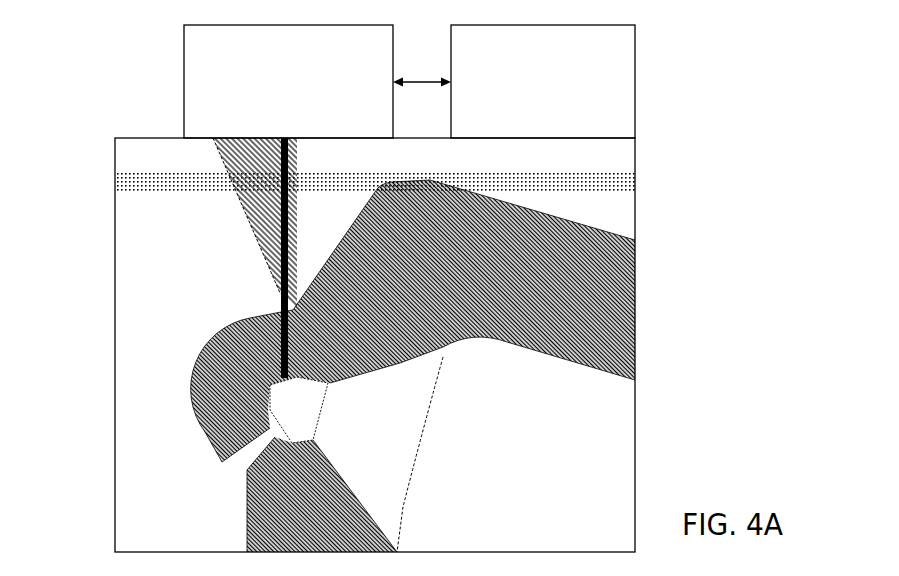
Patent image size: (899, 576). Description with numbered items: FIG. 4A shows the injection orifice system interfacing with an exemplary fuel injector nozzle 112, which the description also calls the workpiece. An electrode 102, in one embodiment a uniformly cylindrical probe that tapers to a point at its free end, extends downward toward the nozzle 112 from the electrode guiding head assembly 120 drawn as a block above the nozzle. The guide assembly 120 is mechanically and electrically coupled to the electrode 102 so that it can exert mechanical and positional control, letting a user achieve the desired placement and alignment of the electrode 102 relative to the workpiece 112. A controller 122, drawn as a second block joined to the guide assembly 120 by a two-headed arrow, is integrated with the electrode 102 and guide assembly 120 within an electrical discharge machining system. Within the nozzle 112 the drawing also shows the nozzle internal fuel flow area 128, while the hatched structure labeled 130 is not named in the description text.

The electrode 102 is at (159, 258).
The fuel injector nozzle 112 is at (527, 321).
The electrode guiding head assembly 120 is at (273, 114).
The controller 122 is at (528, 104).
The nozzle internal fuel flow area 128 is at (612, 454).
The tissue structure 130 is at (203, 464).